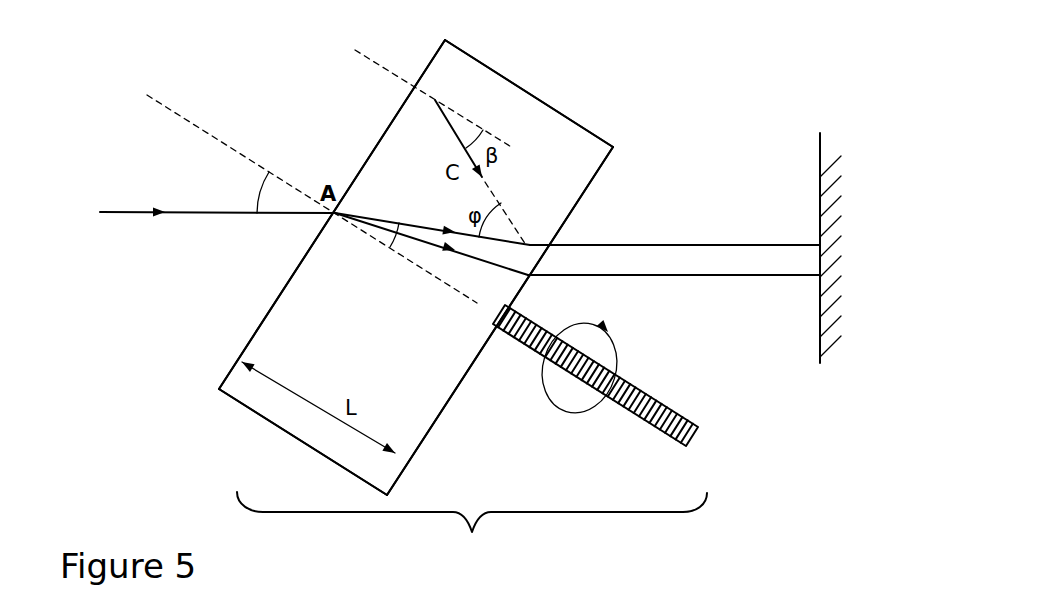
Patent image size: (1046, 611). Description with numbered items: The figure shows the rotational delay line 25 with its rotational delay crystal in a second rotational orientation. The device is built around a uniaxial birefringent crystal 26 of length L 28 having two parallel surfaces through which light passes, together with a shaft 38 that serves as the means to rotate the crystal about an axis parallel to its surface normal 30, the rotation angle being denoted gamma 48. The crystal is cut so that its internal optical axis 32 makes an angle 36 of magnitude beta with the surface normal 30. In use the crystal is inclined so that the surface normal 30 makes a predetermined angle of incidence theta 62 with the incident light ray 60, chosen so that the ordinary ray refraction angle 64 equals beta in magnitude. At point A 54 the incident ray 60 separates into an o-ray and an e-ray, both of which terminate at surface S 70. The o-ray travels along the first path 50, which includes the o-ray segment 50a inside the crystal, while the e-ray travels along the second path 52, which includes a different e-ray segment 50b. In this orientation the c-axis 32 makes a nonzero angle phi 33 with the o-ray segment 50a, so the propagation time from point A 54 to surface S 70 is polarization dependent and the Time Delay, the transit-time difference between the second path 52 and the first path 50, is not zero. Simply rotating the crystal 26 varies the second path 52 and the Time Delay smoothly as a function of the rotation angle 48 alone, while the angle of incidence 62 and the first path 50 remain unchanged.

The rotational delay line 25 is at (472, 528).
The uniaxial birefringent crystal 26 is at (330, 357).
The length L 28 is at (297, 415).
The surface normal 30 is at (160, 104).
The internal optical axis 32 is at (448, 140).
The angle φ 33 is at (497, 220).
The c-axis orientation angle β 36 is at (487, 135).
The shaft 38 is at (680, 405).
The rotation angle γ 48 is at (579, 393).
The path P1 50 is at (622, 232).
The o-ray segment 50a is at (428, 222).
The e-ray segment 50b is at (485, 260).
The path P2 52 is at (625, 285).
The point A 54 is at (318, 222).
The incident light ray 60 is at (108, 218).
The angle of incidence θ 62 is at (257, 186).
The ordinary ray refraction angle θ' 64 is at (390, 237).
The surface S 70 is at (812, 165).